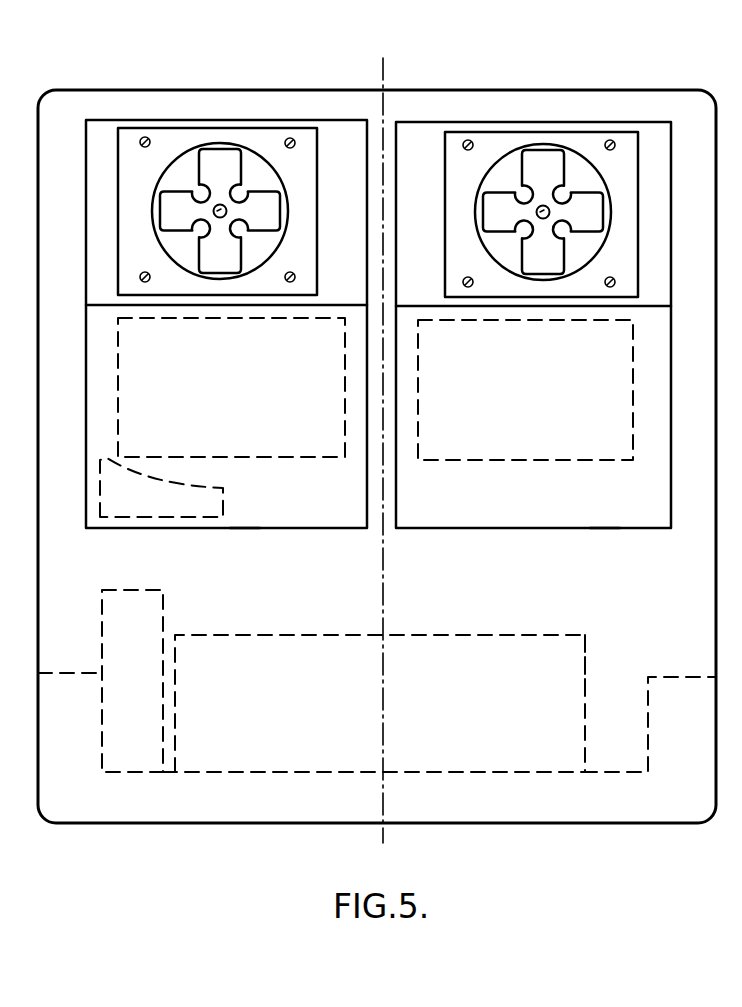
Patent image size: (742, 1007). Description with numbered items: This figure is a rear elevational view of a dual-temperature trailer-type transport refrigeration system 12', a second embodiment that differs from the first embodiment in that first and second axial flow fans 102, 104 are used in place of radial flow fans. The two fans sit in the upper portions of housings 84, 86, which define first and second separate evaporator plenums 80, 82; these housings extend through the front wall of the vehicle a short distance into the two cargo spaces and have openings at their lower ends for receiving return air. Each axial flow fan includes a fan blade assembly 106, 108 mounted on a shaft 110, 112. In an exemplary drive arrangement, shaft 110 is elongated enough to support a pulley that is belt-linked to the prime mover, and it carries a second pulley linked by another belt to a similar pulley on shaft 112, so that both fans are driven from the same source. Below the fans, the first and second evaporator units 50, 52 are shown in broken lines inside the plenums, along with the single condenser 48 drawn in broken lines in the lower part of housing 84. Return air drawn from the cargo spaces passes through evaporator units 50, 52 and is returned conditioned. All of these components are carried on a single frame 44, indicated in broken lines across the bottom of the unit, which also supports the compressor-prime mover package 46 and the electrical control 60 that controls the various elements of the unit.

The transport refrigeration system 12' is at (377, 447).
The first evaporator plenum 80 is at (318, 528).
The second evaporator plenum 82 is at (518, 528).
The first axial flow fan 102 is at (172, 140).
The second axial flow fan 104 is at (497, 147).
The fan blade assembly 106 is at (229, 160).
The fan blade assembly 108 is at (597, 220).
The shaft 110 is at (214, 214).
The shaft 112 is at (537, 215).
The first evaporator unit 50 is at (277, 457).
The second evaporator unit 52 is at (508, 460).
The condenser 48 is at (212, 487).
The housing 84 is at (242, 528).
The housing 86 is at (602, 528).
The electrical control 60 is at (130, 589).
The frame 44 is at (284, 770).
The compressor-prime mover package 46 is at (586, 634).